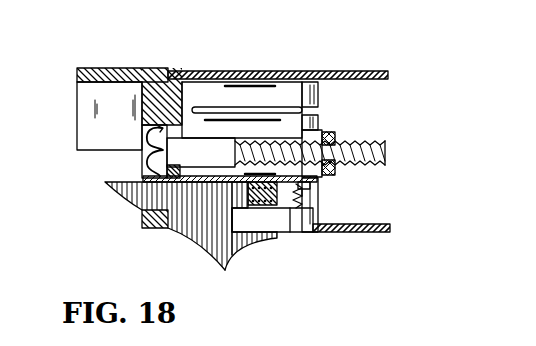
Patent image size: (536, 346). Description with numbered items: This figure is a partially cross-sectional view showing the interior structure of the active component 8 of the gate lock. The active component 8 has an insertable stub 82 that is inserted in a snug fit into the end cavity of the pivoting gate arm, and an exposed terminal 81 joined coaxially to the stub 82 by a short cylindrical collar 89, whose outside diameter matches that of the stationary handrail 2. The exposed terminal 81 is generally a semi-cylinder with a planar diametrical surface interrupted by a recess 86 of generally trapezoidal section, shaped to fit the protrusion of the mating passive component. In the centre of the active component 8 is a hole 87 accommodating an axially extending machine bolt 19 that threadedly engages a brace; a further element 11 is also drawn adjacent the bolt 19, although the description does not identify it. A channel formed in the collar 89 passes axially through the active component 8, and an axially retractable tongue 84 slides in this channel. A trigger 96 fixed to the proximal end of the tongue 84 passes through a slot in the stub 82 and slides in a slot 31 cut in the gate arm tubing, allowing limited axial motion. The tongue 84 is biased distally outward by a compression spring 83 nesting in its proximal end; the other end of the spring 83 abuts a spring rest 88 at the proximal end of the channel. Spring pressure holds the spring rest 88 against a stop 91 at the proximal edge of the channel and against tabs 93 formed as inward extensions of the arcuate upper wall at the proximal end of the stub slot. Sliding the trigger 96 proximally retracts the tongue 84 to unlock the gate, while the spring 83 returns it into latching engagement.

The stationary handrail 2 is at (364, 233).
The active component 8 is at (227, 48).
The pin 11 is at (195, 107).
The machine bolt 19 is at (142, 172).
The slot 31 is at (257, 232).
The exposed terminal 81 is at (105, 68).
The insertable stub 82 is at (250, 73).
The compression spring 83 is at (287, 190).
The axially retractable tongue 84 is at (118, 200).
The recess 86 is at (87, 107).
The hole 87 is at (142, 155).
The spring rest 88 is at (318, 207).
The cylindrical collar 89 is at (158, 70).
The stop 91 is at (317, 184).
The tabs 93 is at (318, 230).
The trigger 96 is at (233, 253).